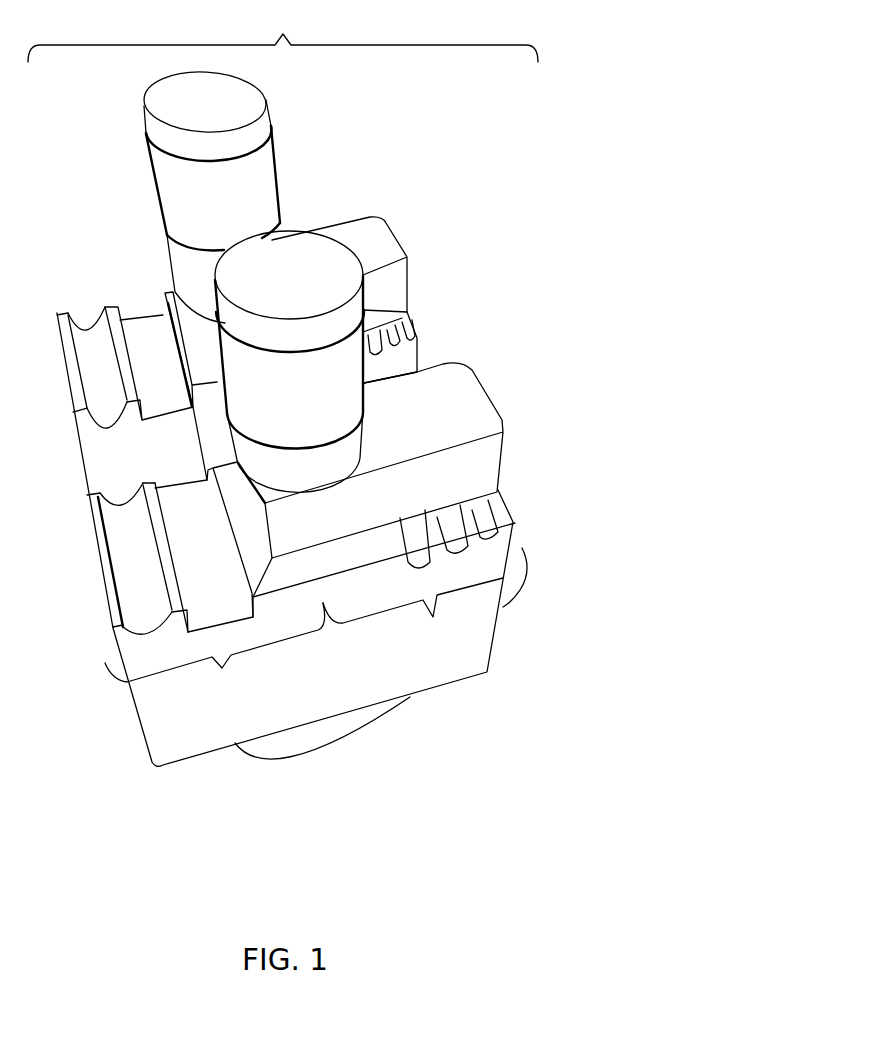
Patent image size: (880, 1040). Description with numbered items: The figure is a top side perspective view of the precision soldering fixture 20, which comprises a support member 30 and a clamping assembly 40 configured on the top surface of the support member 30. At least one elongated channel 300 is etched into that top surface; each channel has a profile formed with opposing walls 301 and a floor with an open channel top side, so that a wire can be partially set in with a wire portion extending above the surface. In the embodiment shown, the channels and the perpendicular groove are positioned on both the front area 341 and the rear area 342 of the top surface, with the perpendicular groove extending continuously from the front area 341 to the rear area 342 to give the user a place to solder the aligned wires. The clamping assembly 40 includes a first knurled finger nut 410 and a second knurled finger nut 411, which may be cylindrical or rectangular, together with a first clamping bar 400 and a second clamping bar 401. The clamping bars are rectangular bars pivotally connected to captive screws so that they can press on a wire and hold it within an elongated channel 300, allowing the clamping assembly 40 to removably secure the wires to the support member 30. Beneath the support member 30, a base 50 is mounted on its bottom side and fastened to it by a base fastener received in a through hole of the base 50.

The precision soldering fixture 20 is at (283, 31).
The support member 30 is at (503, 607).
The elongated channel 300 is at (87, 310).
The opposing walls 301 is at (163, 310).
The front area 341 is at (413, 613).
The rear area 342 is at (215, 654).
The clamping assembly 40 is at (390, 183).
The first clamping bar 400 is at (506, 458).
The second clamping bar 401 is at (410, 273).
The first knurled finger nut 410 is at (363, 310).
The second knurled finger nut 411 is at (279, 166).
The base 50 is at (370, 731).